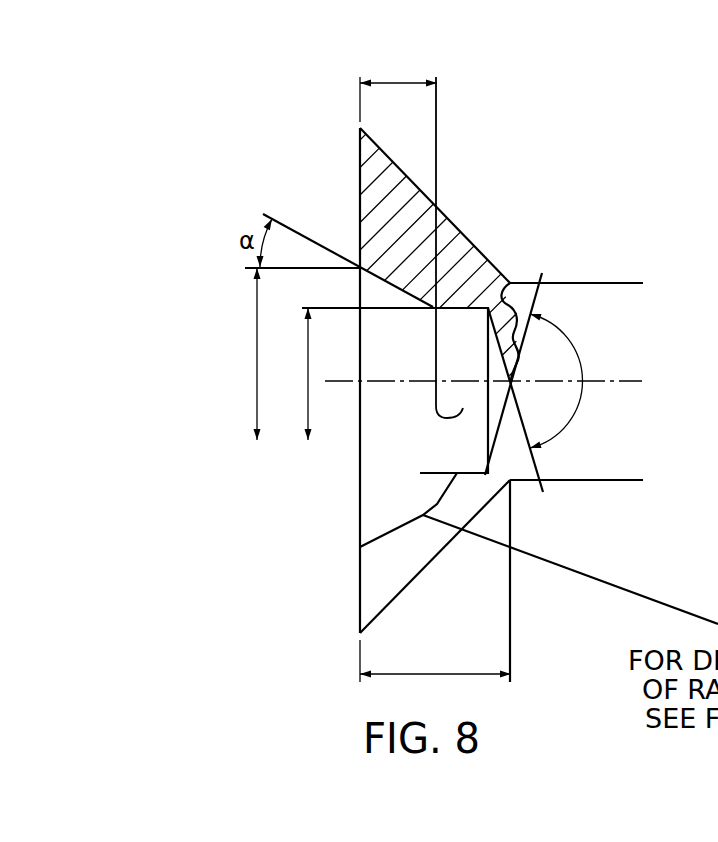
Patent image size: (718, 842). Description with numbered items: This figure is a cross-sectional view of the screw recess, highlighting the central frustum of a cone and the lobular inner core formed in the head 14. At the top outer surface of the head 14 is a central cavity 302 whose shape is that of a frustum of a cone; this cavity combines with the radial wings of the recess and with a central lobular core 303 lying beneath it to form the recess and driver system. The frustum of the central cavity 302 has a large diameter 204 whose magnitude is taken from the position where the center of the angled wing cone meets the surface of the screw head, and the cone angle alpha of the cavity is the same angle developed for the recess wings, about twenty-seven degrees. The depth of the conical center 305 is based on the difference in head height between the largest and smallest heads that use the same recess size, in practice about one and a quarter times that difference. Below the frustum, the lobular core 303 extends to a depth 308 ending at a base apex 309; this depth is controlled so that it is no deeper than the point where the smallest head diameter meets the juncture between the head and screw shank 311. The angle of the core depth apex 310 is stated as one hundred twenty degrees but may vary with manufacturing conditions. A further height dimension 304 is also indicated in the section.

The head 14 is at (346, 183).
The large diameter 204 is at (257, 421).
The central cavity 302 is at (391, 303).
The central lobular core 303 is at (458, 338).
The height dimension 304 is at (308, 421).
The depth of the conical center 305 is at (400, 82).
The depth of the lobular core 308 is at (447, 672).
The base apex 309 is at (518, 384).
The angle of the core depth apex 310 is at (576, 355).
The juncture between the head and screw shank 311 is at (520, 275).